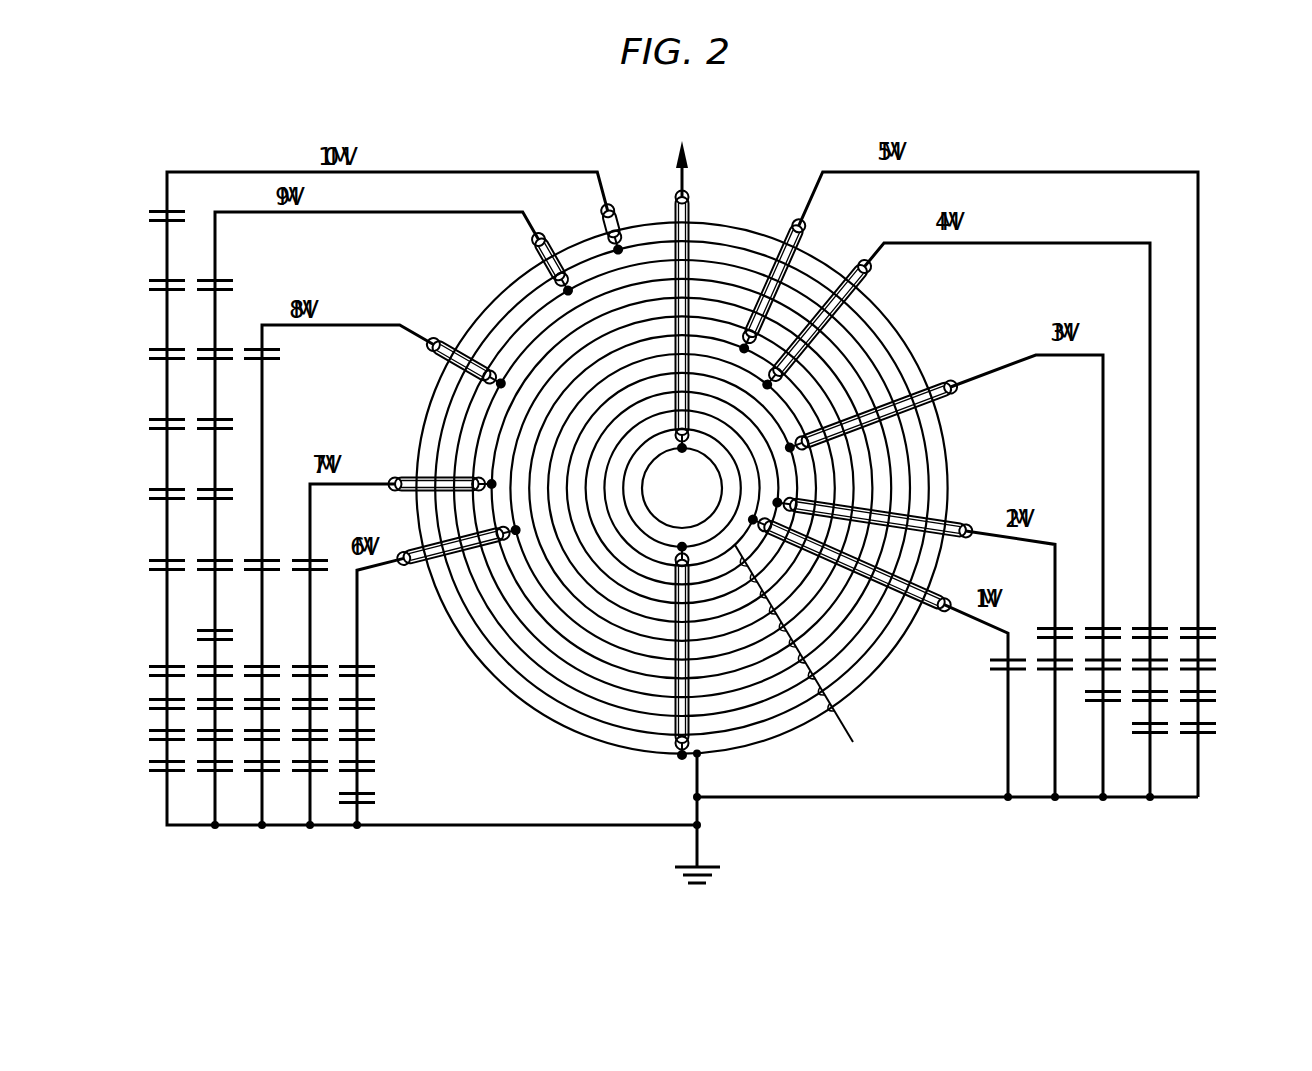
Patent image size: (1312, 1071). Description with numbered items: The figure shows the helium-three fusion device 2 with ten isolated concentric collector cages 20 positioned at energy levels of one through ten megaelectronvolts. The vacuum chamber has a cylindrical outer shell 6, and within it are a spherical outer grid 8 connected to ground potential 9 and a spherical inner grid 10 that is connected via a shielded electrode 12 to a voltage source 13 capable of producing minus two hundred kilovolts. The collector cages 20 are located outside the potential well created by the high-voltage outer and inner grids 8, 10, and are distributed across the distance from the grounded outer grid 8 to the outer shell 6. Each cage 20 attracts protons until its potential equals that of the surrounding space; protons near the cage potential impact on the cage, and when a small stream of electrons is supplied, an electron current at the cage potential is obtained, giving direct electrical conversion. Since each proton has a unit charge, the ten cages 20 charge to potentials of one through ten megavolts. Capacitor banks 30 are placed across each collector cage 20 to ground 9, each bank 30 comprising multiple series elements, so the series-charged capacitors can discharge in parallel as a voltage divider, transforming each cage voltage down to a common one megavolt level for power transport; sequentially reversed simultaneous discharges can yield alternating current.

The 3He fusion device 2 is at (540, 145).
The cylindrical outer shell 6 is at (763, 233).
The spherical outer grid 8 is at (717, 538).
The ground potential 9 is at (717, 873).
The spherical inner grid 10 is at (700, 455).
The shielded electrode 12 is at (693, 211).
The voltage source 13 is at (690, 158).
The collector cage 20 is at (846, 738).
The capacitor bank 30 is at (215, 604).